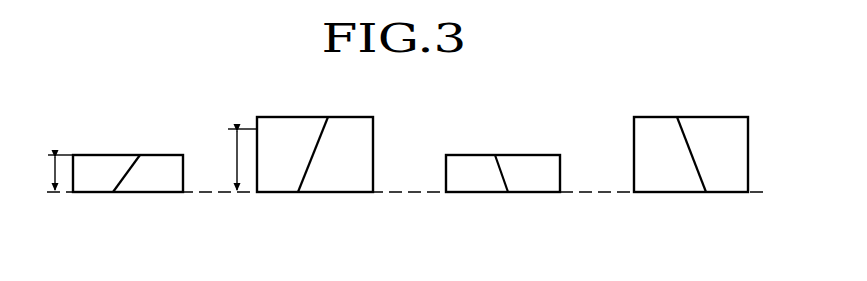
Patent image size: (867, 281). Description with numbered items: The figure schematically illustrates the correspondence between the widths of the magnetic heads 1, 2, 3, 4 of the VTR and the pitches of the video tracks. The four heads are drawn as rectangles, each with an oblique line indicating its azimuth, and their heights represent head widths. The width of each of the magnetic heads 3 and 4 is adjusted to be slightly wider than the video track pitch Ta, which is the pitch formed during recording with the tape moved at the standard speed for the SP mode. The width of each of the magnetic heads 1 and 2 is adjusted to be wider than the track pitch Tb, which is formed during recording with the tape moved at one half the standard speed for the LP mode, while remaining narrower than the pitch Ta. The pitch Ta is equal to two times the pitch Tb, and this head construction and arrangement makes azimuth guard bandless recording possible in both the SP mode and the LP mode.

The magnetic head 1 is at (148, 155).
The magnetic head 2 is at (512, 155).
The magnetic head 3 is at (336, 117).
The magnetic head 4 is at (703, 117).
The video track pitch Ta is at (235, 159).
The video track pitch Tb is at (57, 176).